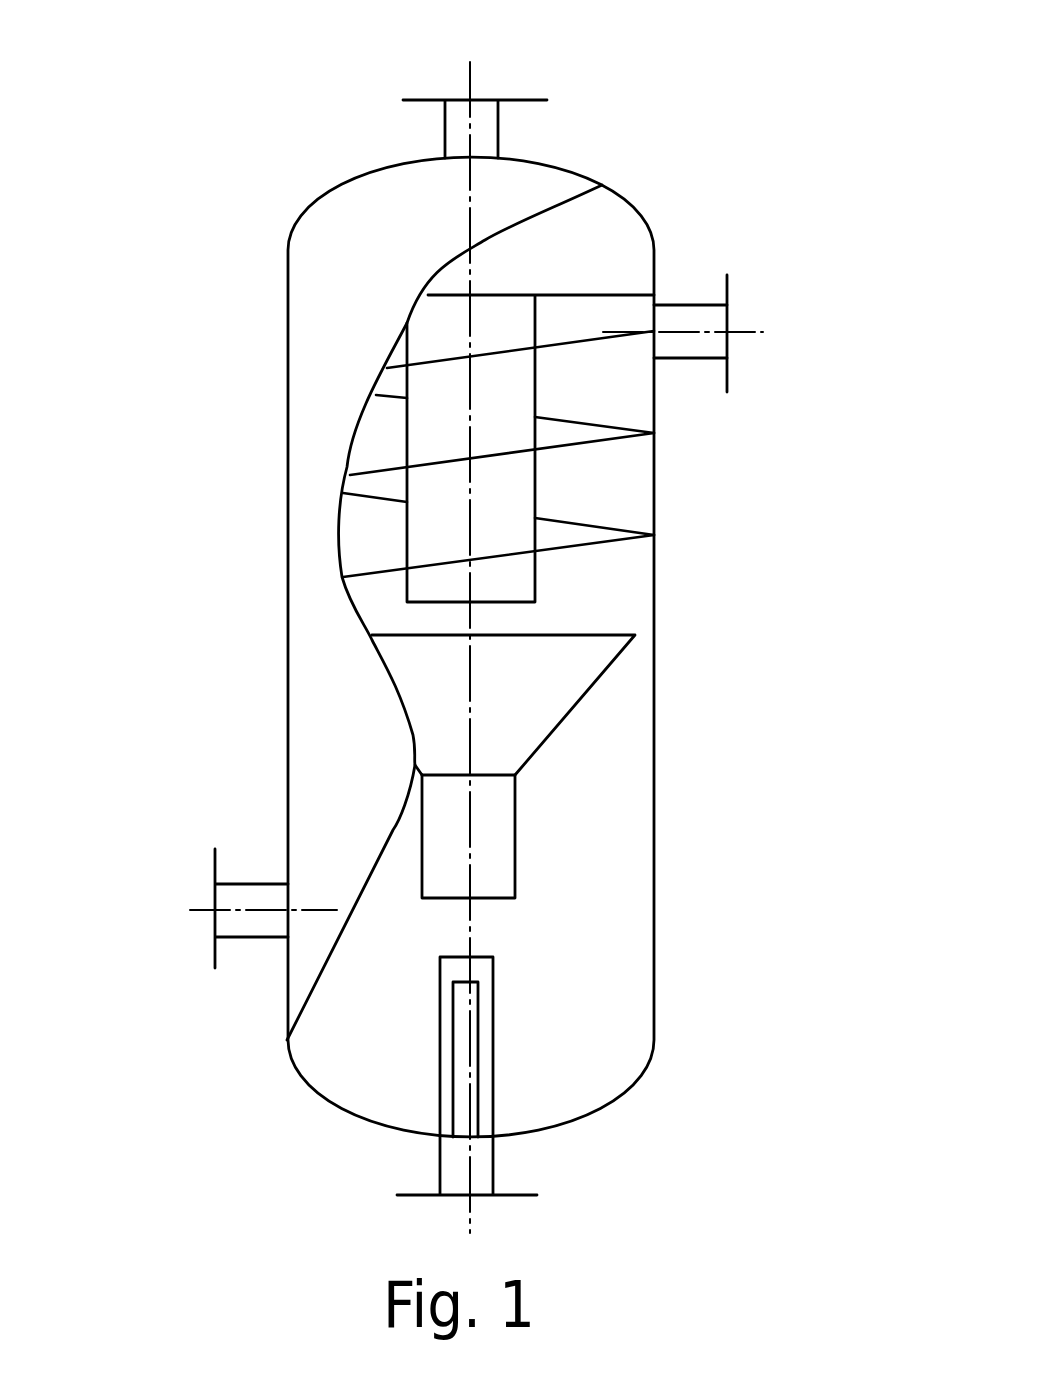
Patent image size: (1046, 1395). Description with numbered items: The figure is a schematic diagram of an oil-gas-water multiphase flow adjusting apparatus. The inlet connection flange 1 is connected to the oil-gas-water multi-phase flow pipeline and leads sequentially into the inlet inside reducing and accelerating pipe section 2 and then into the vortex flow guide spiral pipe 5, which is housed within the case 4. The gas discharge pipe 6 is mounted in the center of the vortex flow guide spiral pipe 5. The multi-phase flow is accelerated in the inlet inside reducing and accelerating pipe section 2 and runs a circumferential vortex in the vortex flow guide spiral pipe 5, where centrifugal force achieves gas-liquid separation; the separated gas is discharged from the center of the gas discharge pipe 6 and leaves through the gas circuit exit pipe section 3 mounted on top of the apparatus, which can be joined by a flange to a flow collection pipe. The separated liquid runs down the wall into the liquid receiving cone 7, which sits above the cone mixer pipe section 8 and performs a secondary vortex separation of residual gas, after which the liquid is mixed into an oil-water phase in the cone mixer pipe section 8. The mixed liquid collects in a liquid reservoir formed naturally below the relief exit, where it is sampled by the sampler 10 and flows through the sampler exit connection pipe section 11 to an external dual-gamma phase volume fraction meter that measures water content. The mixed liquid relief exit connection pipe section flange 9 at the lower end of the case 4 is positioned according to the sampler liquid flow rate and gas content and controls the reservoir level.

The inlet connection flange 1 is at (727, 375).
The inlet inside reducing and accelerating pipe section 2 is at (693, 318).
The gas circuit exit pipe section 3 is at (485, 140).
The case 4 is at (362, 260).
The vortex flow guide spiral pipe 5 is at (405, 368).
The gas discharge pipe 6 is at (458, 528).
The liquid receiving cone 7 is at (473, 695).
The cone mixer pipe section 8 is at (457, 828).
The mixed liquid relief exit connection pipe section flange 9 is at (215, 858).
The sampler 10 is at (450, 1097).
The sampler exit connection pipe section 11 is at (478, 1163).